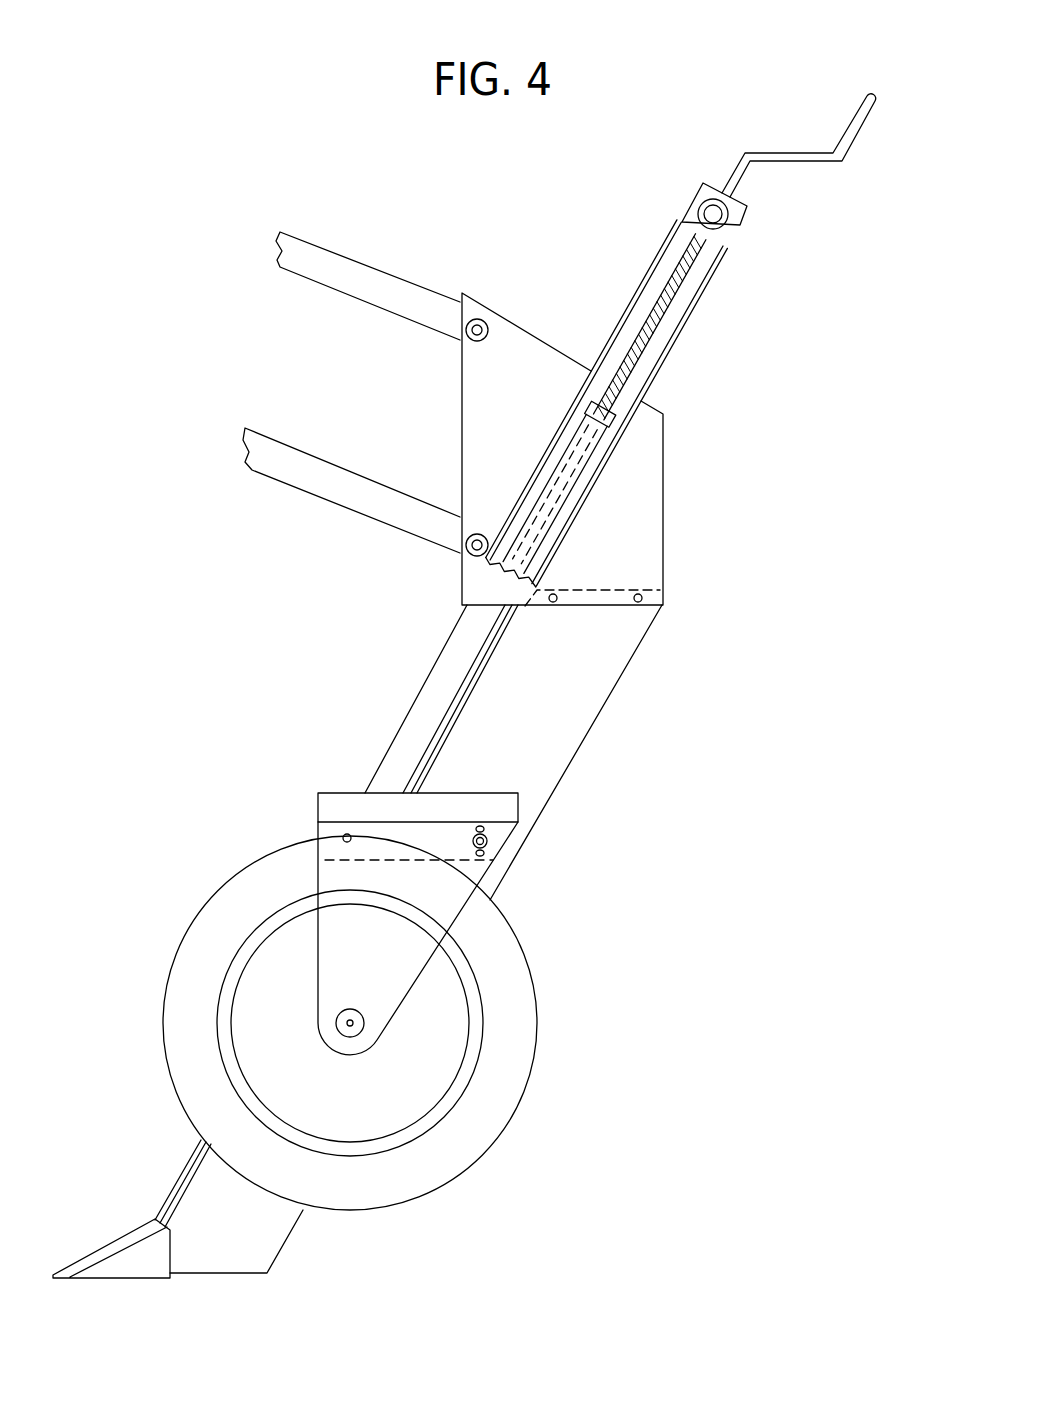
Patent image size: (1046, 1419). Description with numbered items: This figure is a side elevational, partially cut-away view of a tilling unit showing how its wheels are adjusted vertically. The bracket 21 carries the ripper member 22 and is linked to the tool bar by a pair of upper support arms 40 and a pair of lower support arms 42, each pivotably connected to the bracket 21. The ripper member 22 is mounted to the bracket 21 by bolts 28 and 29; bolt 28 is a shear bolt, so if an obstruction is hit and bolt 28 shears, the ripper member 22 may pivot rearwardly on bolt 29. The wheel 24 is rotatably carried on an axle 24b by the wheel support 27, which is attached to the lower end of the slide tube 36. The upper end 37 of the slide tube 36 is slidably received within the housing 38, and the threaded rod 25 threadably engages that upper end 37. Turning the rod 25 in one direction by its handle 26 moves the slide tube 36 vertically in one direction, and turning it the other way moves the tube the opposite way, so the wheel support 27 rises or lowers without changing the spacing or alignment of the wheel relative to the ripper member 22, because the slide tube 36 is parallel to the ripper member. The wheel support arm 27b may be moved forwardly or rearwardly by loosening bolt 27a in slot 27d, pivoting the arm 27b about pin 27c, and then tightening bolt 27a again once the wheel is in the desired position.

The bracket 21 is at (657, 464).
The ripper member 22 is at (574, 754).
The wheel 24 is at (537, 1032).
The wheel support axle 24b is at (352, 1037).
The threaded rod 25 is at (701, 254).
The handle 26 is at (855, 116).
The wheel support 27 is at (316, 800).
The bolt 27a is at (488, 841).
The wheel support arm 27b is at (410, 975).
The pin 27c is at (347, 843).
The slot 27d is at (482, 857).
The shear bolt 28 is at (553, 603).
The bolt 29 is at (638, 593).
The slide tube 36 is at (438, 660).
The upper end of tube 37 is at (573, 440).
The housing 38 is at (634, 296).
The upper support arms 40 is at (415, 293).
The lower support arms 42 is at (347, 474).